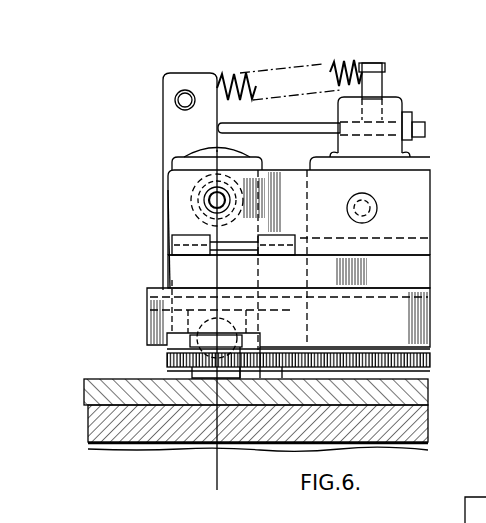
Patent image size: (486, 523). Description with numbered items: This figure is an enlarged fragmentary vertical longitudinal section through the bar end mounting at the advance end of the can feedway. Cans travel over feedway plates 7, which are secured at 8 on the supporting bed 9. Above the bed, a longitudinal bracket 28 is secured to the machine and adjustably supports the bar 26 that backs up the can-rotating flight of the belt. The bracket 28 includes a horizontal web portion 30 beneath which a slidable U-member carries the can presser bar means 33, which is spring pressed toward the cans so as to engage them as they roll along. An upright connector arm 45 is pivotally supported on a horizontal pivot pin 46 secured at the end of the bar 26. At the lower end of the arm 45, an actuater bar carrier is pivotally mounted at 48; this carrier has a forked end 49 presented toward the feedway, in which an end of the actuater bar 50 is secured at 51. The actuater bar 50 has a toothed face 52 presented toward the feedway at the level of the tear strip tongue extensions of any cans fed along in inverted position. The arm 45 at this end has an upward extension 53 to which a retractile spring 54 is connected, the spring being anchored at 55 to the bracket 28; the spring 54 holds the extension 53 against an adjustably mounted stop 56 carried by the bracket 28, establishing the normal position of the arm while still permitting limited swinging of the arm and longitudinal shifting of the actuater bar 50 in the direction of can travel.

The feedway plate 7 is at (428, 393).
The securing means for feedway plates 8 is at (223, 143).
The supporting bed 9 is at (408, 428).
The bar 26 is at (412, 228).
The longitudinal bracket 28 is at (415, 163).
The horizontal web portion 30 is at (410, 278).
The can presser bar means 33 is at (400, 308).
The connector arm 45 is at (168, 220).
The horizontal pivot pin 46 is at (196, 198).
The pivot mounting of carrier 48 is at (200, 345).
The forked end 49 is at (195, 378).
The actuater bar 50 is at (428, 358).
The securing means for actuater bar 51 is at (225, 378).
The toothed face 52 is at (412, 351).
The upward extension 53 is at (170, 88).
The retractile spring 54 is at (338, 85).
The spring anchorage 55 is at (384, 74).
The adjustably mounted stop 56 is at (283, 132).